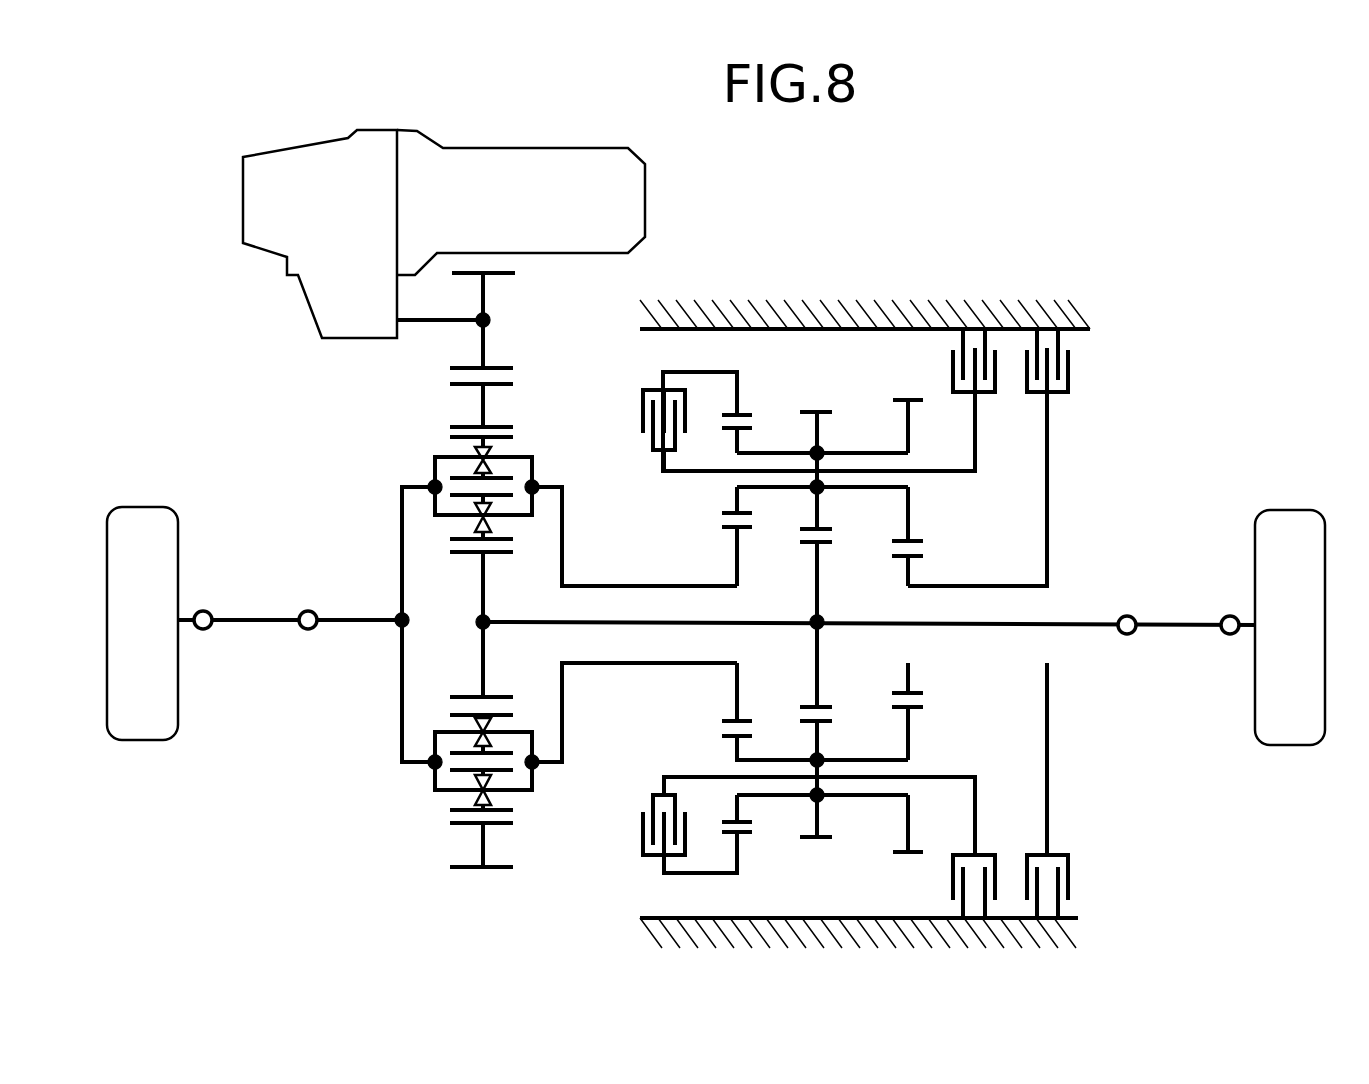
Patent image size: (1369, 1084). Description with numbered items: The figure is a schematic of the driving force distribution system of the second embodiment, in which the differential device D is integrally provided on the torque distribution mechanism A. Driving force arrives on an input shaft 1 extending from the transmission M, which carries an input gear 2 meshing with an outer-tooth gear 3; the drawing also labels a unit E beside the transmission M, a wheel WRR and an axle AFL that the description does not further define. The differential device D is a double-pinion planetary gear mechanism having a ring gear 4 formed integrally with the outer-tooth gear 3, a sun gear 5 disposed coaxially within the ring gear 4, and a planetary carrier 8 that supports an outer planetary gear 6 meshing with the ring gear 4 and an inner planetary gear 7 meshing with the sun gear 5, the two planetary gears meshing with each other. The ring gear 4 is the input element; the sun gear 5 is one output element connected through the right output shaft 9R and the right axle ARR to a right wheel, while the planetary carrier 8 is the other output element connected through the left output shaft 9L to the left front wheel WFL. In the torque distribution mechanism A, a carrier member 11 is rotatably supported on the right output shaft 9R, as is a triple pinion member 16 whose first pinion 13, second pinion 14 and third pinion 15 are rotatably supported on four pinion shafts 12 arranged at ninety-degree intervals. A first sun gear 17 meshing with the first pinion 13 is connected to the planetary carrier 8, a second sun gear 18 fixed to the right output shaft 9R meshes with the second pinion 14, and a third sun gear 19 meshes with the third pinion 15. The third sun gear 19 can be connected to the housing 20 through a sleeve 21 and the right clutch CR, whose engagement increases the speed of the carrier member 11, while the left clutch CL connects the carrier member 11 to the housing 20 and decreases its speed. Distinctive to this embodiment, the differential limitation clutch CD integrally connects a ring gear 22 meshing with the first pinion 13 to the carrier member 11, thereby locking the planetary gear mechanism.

The input shaft 1 is at (470, 318).
The input gear 2 is at (510, 275).
The outer-tooth gear 3 is at (513, 384).
The ring gear 4 is at (513, 427).
The sun gear 5 is at (471, 552).
The outer planetary gear 6 is at (513, 437).
The inner planetary gear 7 is at (513, 539).
The planetary carrier 8 is at (402, 515).
The left output shaft 9L is at (357, 619).
The right output shaft 9R is at (1028, 624).
The carrier member 11 is at (977, 447).
The pinion shafts 12 is at (922, 473).
The first pinion 13 is at (728, 428).
The second pinion 14 is at (818, 410).
The third pinion 15 is at (898, 398).
The triple pinion member 16 is at (770, 452).
The first sun gear 17 is at (730, 528).
The second sun gear 18 is at (805, 544).
The third sun gear 19 is at (900, 557).
The housing 20 is at (820, 318).
The sleeve 21 is at (995, 586).
The ring gear 22 is at (740, 412).
The transmission M is at (322, 212).
The engine E is at (551, 207).
The differential device D is at (425, 595).
The torque distribution mechanism A is at (872, 579).
The differential limitation clutch CD is at (644, 396).
The left clutch CL is at (950, 363).
The right clutch CR is at (1072, 380).
The left front wheel WFL is at (142, 512).
The right rear wheel WRR is at (1287, 527).
The left front axle AFL is at (262, 619).
The right axle ARR is at (1165, 624).